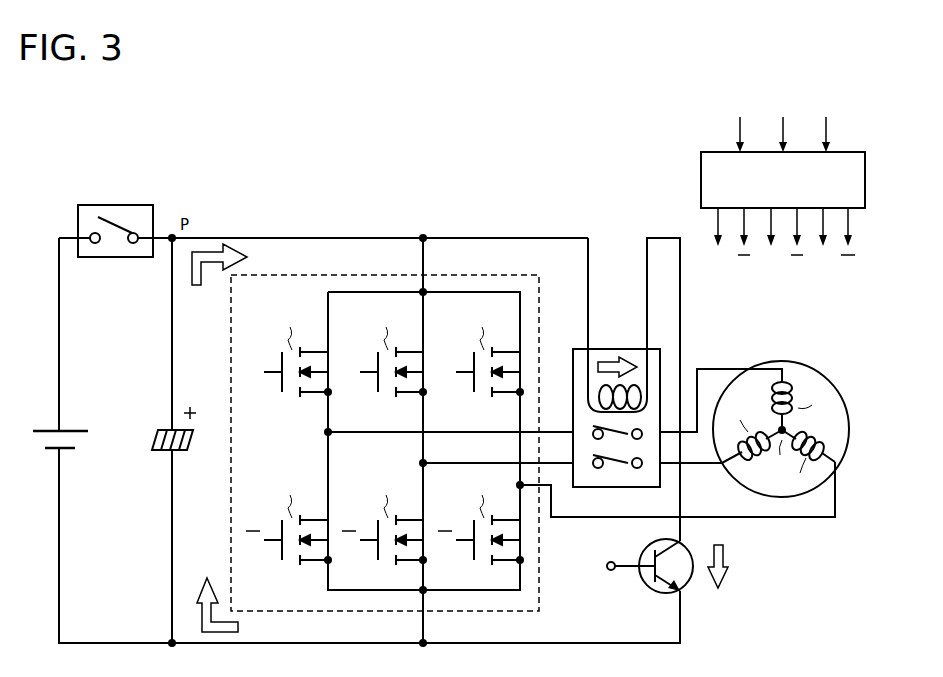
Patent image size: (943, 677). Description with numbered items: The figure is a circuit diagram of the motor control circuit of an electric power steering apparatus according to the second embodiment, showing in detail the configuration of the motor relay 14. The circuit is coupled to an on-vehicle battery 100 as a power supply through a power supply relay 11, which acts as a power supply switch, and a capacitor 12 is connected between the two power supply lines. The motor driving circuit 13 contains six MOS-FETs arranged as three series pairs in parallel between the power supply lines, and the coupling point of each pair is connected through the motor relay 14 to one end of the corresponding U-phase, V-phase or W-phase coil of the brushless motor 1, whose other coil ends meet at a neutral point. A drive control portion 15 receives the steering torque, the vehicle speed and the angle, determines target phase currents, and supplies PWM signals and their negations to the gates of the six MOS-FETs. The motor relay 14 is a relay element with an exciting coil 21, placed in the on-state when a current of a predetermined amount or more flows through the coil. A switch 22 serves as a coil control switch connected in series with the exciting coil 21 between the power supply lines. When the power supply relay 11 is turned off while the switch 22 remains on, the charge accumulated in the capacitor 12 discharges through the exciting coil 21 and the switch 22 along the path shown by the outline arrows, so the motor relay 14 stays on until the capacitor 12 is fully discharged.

The brushless motor 1 is at (782, 361).
The power supply relay 11 is at (112, 205).
The capacitor 12 is at (162, 429).
The motor driving circuit 13 is at (470, 275).
The motor relay 14 is at (613, 348).
The drive control portion 15 is at (701, 180).
The exciting coil 21 is at (640, 400).
The switch 22 is at (648, 590).
The on-vehicle battery 100 is at (45, 429).